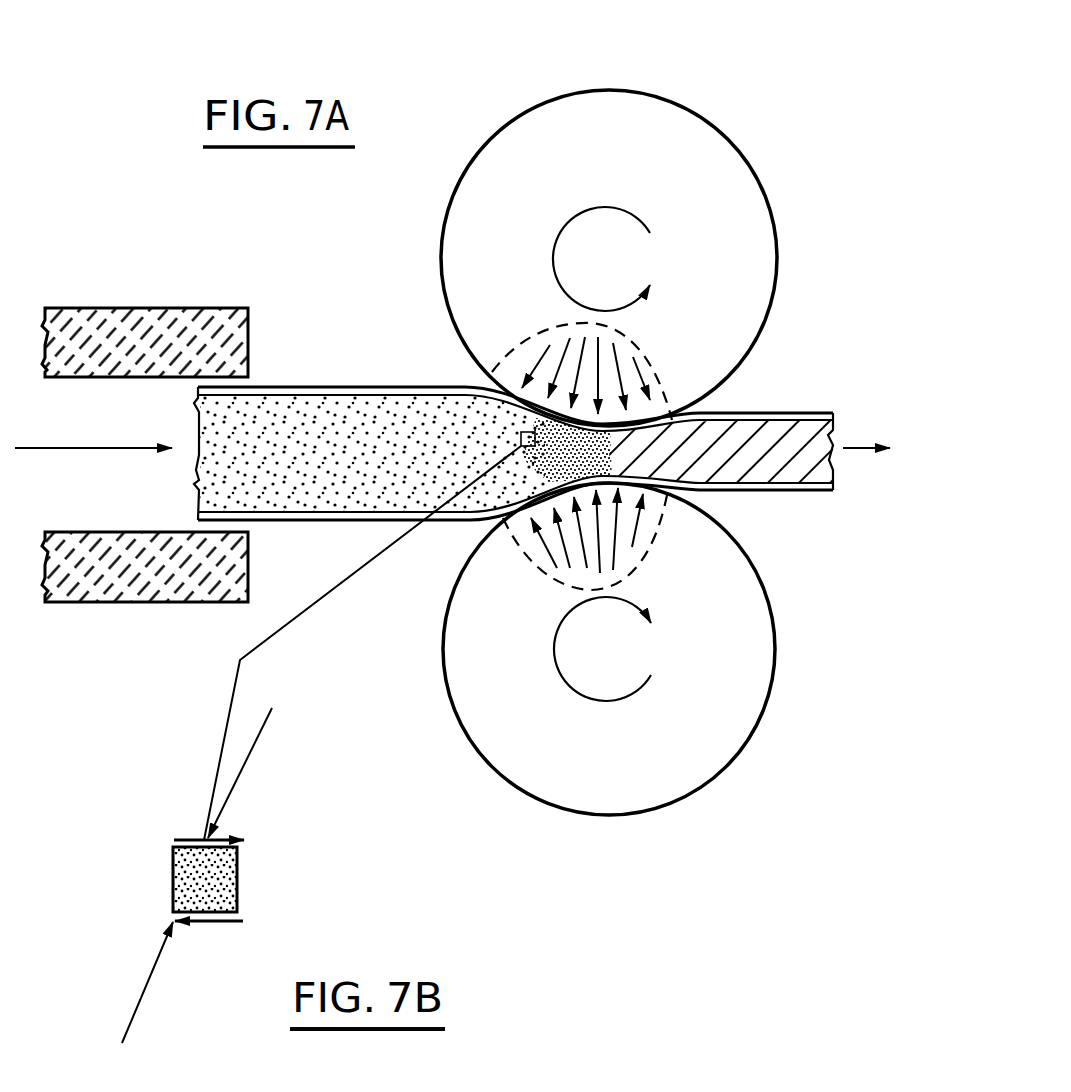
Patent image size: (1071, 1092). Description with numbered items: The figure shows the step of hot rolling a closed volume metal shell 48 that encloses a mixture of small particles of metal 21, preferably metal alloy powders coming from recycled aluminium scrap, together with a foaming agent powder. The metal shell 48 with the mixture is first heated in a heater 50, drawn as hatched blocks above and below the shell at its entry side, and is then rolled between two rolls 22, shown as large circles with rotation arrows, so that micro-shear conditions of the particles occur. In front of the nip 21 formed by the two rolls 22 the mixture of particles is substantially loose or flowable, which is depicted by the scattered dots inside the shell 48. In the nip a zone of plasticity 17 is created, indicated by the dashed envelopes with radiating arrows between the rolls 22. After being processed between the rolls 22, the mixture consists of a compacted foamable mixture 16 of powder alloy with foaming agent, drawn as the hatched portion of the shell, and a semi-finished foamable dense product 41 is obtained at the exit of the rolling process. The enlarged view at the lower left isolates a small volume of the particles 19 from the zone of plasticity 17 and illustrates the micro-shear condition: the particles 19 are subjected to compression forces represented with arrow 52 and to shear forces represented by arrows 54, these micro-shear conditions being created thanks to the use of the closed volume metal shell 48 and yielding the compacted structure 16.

In FIG. 7A, the compacted foamable mixture 16 is at (814, 470).
In FIG. 7A, the zone of plasticity 17 is at (557, 308).
In FIG. 7A, the particles 19 is at (521, 433).
In FIG. 7B, the particles 19 is at (185, 868).
In FIG. 7A, the mixture of small particles of metal 21 is at (342, 497).
In FIG. 7A, the rolls 22 is at (688, 125).
In FIG. 7A, the semi-finished foamable dense product 41 is at (769, 402).
In FIG. 7A, the closed volume metal shell 48 is at (330, 387).
In FIG. 7A, the heater 50 is at (163, 310).
In FIG. 7B, the arrow representing compression forces 52 is at (238, 782).
In FIG. 7B, the arrows representing shear forces 54 is at (192, 839).